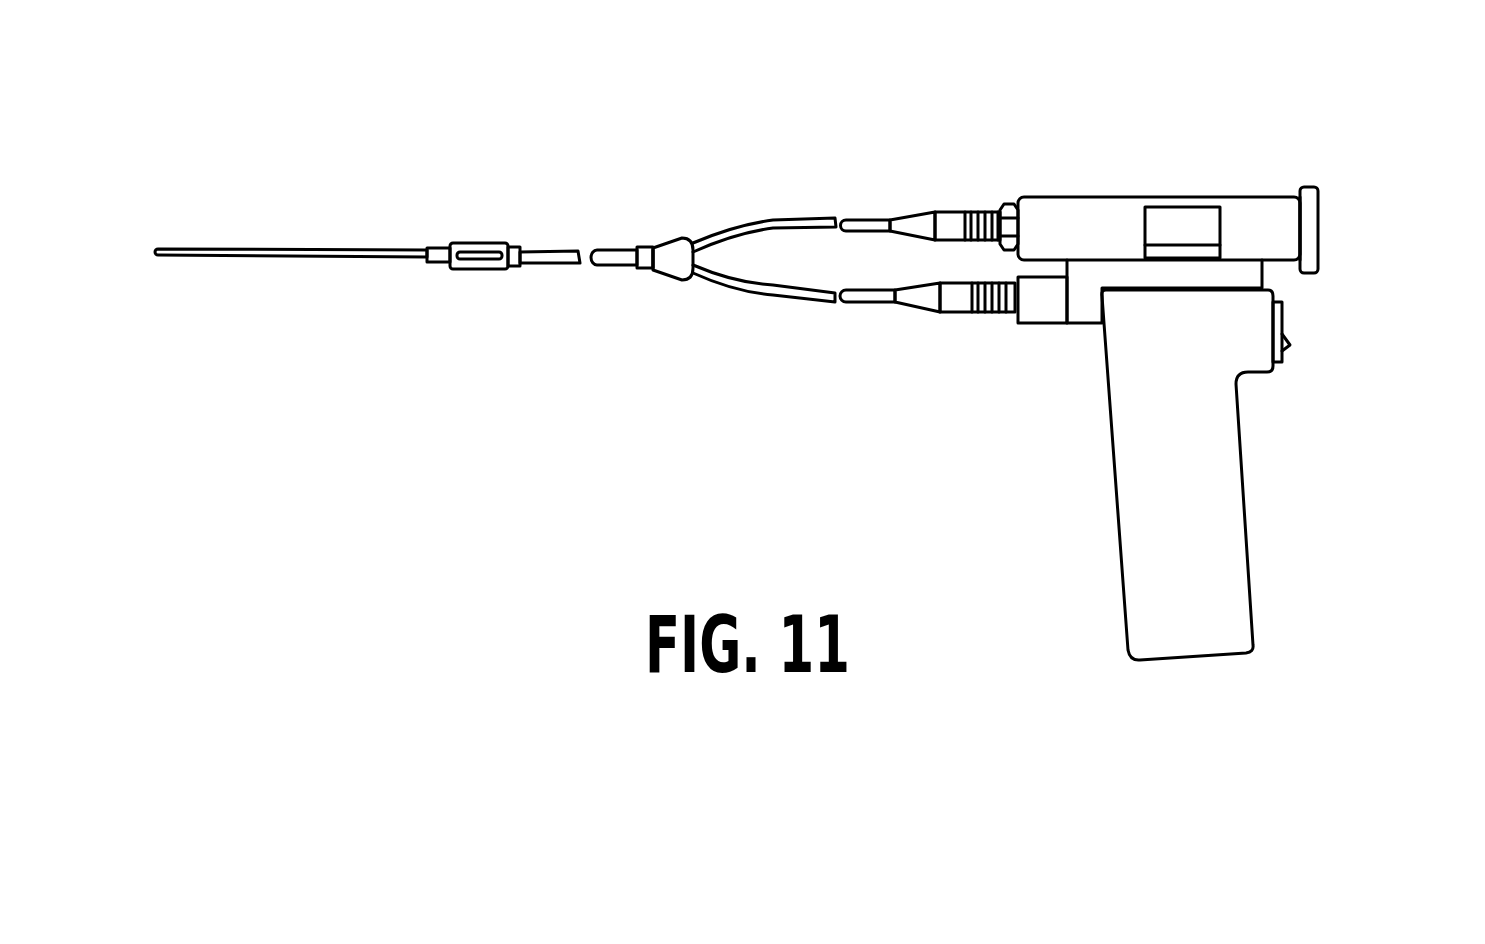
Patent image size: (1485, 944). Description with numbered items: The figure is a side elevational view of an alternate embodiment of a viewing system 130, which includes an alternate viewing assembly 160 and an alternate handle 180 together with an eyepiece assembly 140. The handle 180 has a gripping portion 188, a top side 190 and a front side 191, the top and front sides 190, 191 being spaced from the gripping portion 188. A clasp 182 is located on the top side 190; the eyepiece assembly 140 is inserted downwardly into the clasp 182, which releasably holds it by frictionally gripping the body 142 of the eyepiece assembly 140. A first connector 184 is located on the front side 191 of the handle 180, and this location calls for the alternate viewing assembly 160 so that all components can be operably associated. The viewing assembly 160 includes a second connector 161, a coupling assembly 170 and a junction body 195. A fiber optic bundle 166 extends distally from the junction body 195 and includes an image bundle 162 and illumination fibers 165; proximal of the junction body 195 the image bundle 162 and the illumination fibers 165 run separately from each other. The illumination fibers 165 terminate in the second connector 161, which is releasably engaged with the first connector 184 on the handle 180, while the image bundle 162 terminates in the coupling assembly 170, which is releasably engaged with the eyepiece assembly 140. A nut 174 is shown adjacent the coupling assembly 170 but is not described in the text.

The viewing system 130 is at (717, 425).
The eyepiece assembly 140 is at (1268, 198).
The body 142 is at (1072, 220).
The viewing assembly 160 is at (548, 248).
The second connector 161 is at (1000, 318).
The image bundle 162 is at (755, 232).
The illumination fibers 165 is at (742, 283).
The fiber optic bundle 166 is at (610, 250).
The coupling assembly 170 is at (1000, 210).
The connector nut 174 is at (1003, 205).
The handle 180 is at (1243, 485).
The clasp 182 is at (1190, 228).
The first connector 184 is at (1032, 302).
The gripping portion 188 is at (1205, 462).
The top side 190 is at (1240, 262).
The front side 191 is at (1063, 297).
The junction body 195 is at (672, 263).